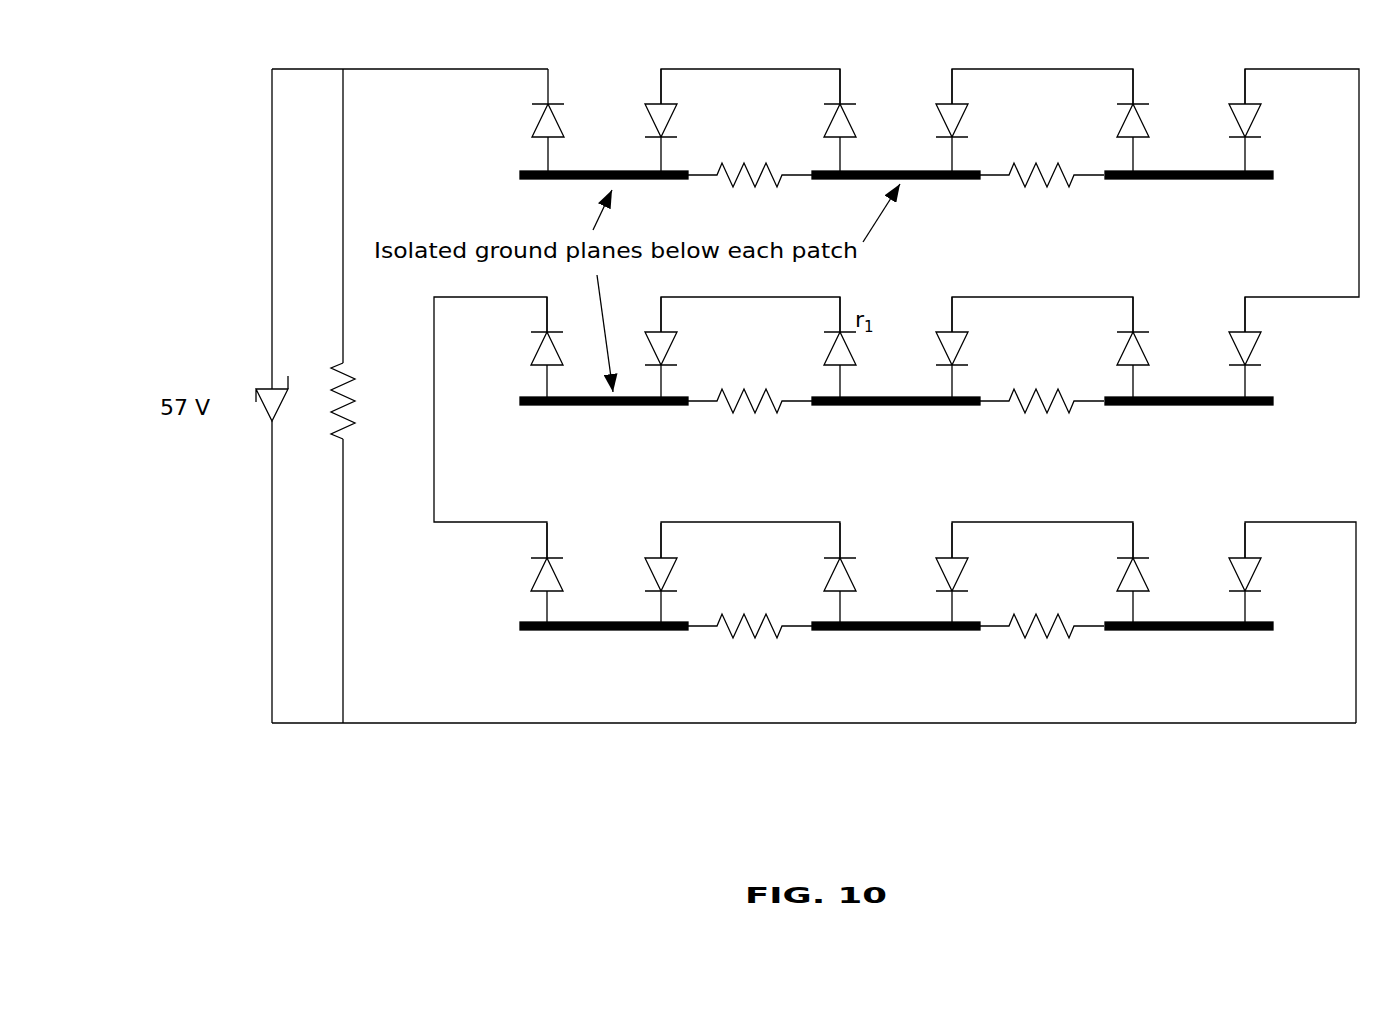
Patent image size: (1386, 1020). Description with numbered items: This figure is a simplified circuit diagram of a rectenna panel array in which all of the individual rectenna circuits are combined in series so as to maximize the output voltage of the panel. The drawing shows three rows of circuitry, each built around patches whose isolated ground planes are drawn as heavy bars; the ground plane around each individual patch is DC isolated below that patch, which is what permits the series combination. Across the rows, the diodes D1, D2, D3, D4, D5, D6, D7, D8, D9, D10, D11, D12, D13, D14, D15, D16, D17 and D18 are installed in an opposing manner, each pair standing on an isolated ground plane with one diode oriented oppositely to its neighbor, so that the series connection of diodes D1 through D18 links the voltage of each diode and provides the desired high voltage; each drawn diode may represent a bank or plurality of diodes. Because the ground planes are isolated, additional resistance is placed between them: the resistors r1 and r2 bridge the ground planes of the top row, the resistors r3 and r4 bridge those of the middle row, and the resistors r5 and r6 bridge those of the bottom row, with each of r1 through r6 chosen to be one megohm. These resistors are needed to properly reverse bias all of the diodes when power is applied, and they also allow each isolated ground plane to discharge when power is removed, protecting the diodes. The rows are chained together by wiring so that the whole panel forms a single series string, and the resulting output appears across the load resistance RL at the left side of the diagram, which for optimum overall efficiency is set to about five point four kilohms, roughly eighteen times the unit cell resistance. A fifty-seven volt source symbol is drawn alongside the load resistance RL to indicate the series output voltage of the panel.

The diode D1 is at (522, 122).
The diode D2 is at (688, 122).
The diode D3 is at (819, 122).
The diode D4 is at (975, 122).
The diode D5 is at (1108, 122).
The diode D6 is at (1265, 122).
The diode D7 is at (528, 350).
The diode D8 is at (680, 350).
The diode D9 is at (819, 350).
The diode D10 is at (978, 350).
The diode D11 is at (1111, 350).
The diode D12 is at (1270, 350).
The diode D13 is at (518, 576).
The diode D14 is at (690, 576).
The diode D15 is at (815, 576).
The diode D16 is at (978, 576).
The diode D17 is at (1109, 576).
The diode D18 is at (1271, 576).
The resistor r1 is at (750, 197).
The resistor r2 is at (1042, 197).
The resistor r3 is at (750, 430).
The resistor r4 is at (1042, 430).
The resistor r5 is at (750, 658).
The resistor r6 is at (1042, 658).
The load resistance RL is at (361, 401).